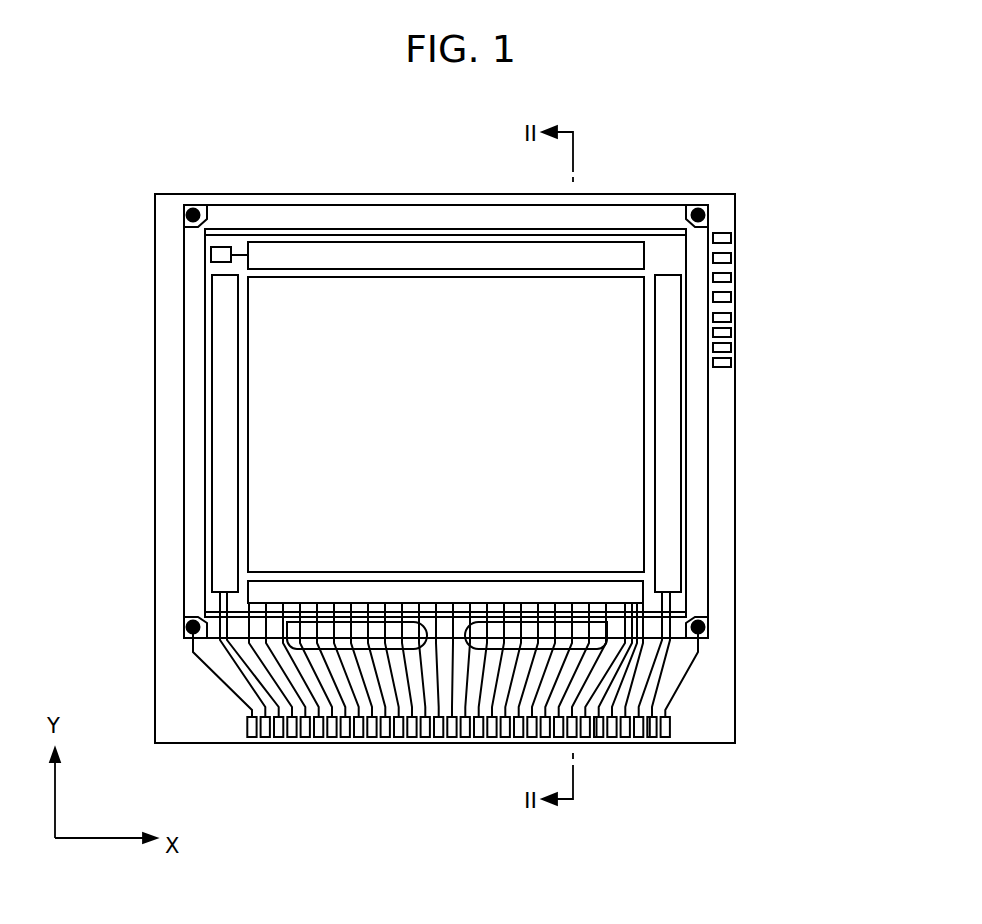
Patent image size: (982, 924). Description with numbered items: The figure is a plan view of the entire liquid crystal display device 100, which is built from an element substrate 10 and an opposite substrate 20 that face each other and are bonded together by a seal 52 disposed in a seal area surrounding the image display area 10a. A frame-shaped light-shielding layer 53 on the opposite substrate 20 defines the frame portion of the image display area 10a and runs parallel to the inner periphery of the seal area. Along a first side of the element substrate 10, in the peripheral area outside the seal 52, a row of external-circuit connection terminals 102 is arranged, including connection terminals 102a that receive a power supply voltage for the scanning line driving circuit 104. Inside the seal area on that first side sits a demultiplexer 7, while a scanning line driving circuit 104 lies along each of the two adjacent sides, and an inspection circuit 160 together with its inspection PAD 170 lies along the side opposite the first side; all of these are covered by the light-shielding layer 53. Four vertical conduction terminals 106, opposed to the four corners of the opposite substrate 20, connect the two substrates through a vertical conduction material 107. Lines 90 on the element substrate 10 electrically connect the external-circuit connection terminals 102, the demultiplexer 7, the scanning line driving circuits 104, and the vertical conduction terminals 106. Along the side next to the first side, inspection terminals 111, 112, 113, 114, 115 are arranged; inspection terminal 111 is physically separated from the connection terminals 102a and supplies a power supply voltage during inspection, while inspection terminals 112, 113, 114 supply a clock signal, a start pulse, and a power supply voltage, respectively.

The liquid crystal display device 100 is at (715, 145).
The element substrate 10 is at (278, 198).
The image display area 10a is at (327, 392).
The opposite substrate 20 is at (466, 205).
The seal 52 is at (695, 435).
The frame-shaped light-shielding layer 53 is at (677, 597).
The demultiplexer 7 is at (310, 598).
The lines 90 is at (237, 697).
The external-circuit connection terminals 102 is at (373, 730).
The connection terminals 102a is at (597, 730).
The scanning line driving circuit 104 is at (670, 491).
The vertical conduction terminals 106 is at (712, 205).
The vertical conduction material 107 is at (188, 625).
The inspection terminal 111 is at (729, 238).
The inspection terminal 112 is at (729, 258).
The inspection terminal 113 is at (729, 277).
The inspection terminal 114 is at (729, 296).
The inspection terminal 115 is at (744, 375).
The inspection circuit 160 is at (414, 252).
The inspection PAD 170 is at (223, 248).